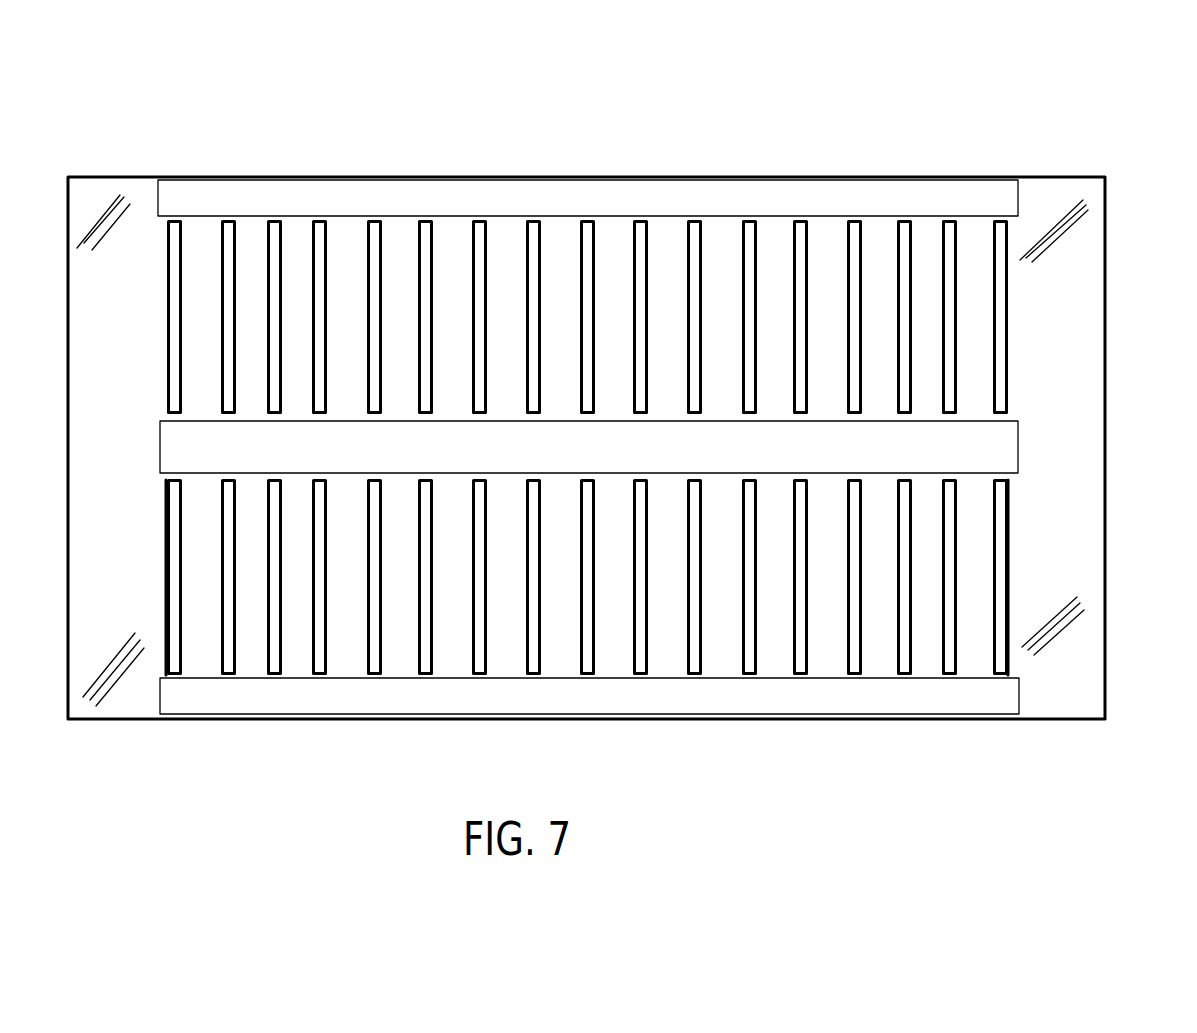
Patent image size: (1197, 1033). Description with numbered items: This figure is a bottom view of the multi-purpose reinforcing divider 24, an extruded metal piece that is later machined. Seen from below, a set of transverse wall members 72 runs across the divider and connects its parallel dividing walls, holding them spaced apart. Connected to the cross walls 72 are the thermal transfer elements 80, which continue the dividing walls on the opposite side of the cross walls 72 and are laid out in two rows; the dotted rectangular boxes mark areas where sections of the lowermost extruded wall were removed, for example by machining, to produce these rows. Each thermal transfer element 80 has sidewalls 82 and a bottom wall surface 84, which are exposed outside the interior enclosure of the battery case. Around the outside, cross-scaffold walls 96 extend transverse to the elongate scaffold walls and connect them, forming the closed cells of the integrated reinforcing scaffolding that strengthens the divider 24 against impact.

The multi-purpose reinforcing divider 24 is at (550, 68).
The transverse wall members 72 is at (883, 659).
The thermal transfer elements 80 is at (1010, 223).
The sidewalls 82 is at (165, 560).
The bottom wall surface 84 is at (172, 515).
The cross-scaffold walls 96 is at (1070, 705).